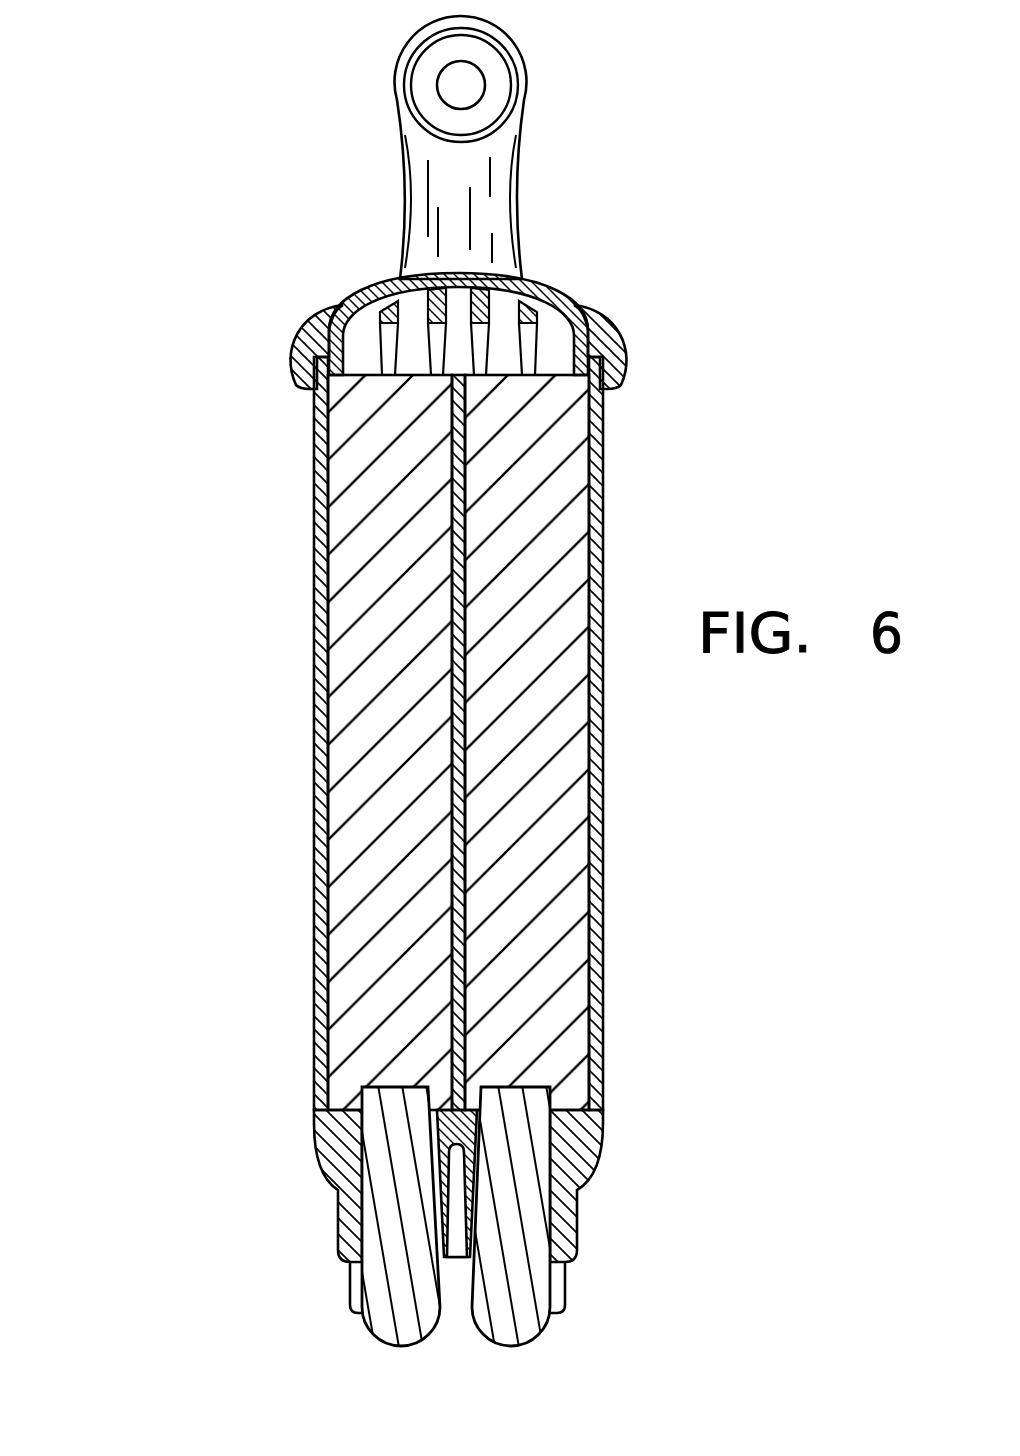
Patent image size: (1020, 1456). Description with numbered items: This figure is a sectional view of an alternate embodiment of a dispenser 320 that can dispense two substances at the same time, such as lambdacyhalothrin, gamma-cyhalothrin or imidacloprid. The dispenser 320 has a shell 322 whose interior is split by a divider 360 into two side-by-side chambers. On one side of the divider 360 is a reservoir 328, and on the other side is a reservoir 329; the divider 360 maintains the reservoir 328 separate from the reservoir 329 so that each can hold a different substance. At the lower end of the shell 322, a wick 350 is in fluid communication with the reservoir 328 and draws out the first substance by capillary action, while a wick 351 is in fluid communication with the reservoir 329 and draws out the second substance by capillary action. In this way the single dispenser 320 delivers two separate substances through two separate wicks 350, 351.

The dispenser 320 is at (190, 808).
The shell 322 is at (320, 623).
The reservoir 328 is at (390, 903).
The reservoir 329 is at (552, 880).
The wick 350 is at (405, 1270).
The wick 351 is at (520, 1268).
The divider 360 is at (457, 500).